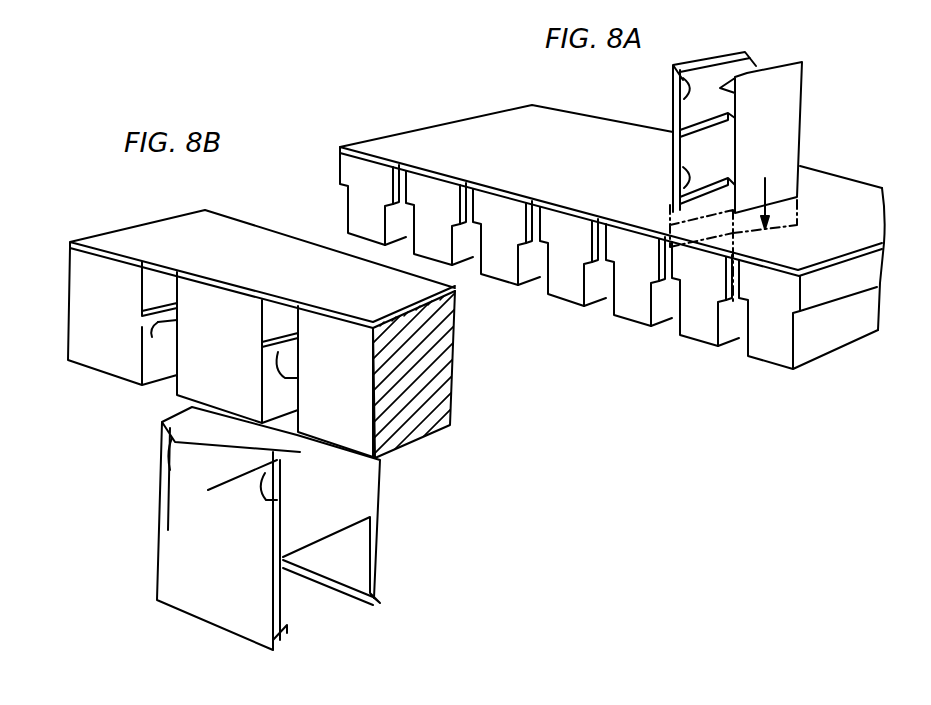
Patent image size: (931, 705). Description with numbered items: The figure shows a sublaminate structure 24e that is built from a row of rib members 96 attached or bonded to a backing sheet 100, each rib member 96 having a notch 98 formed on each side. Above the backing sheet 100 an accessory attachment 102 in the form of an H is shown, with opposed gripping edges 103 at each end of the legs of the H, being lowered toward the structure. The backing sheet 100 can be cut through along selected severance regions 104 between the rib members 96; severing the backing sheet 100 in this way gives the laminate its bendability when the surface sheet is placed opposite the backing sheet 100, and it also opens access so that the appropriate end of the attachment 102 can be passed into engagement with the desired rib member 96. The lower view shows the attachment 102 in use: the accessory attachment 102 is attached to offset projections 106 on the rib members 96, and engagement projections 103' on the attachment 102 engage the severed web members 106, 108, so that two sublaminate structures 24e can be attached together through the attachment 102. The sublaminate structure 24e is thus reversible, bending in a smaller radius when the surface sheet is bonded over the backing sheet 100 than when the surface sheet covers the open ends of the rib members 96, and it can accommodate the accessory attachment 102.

In FIG. 8A, the sublaminate structure 24e is at (430, 100).
In FIG. 8B, the sublaminate structure 24e is at (95, 423).
In FIG. 8A, the rib member 96 is at (577, 246).
In FIG. 8A, the notch 98 is at (343, 184).
In FIG. 8A, the backing sheet 100 is at (546, 152).
In FIG. 8B, the backing sheet 100 is at (334, 334).
In FIG. 8A, the accessory attachment 102 is at (780, 83).
In FIG. 8B, the accessory attachment 102 is at (223, 572).
In FIG. 8A, the gripping edge 103 is at (654, 133).
In FIG. 8B, the engagement projection 103' is at (215, 472).
In FIG. 8A, the severance region 104 is at (670, 208).
In FIG. 8B, the offset projection 106 is at (288, 368).
In FIG. 8B, the severed web member 108 is at (152, 334).